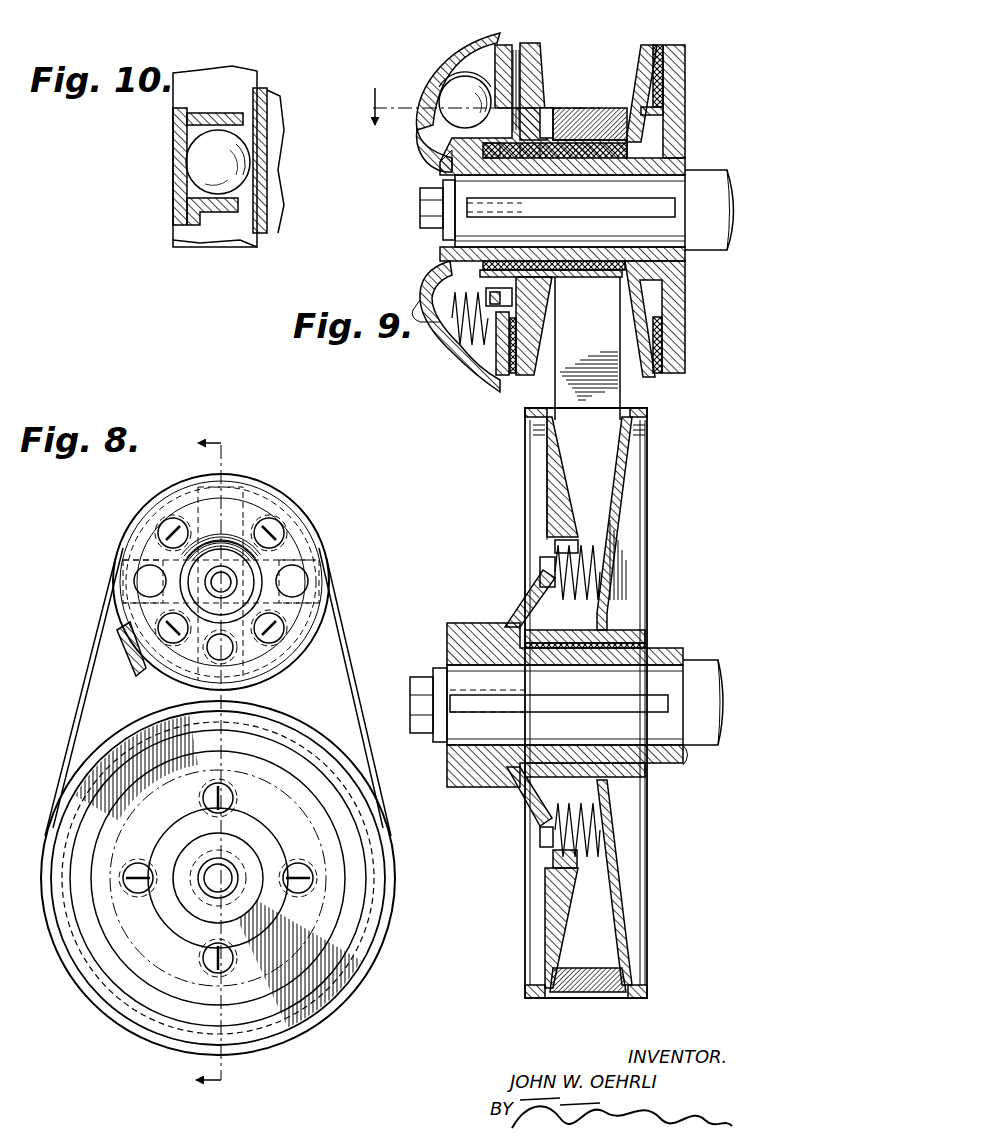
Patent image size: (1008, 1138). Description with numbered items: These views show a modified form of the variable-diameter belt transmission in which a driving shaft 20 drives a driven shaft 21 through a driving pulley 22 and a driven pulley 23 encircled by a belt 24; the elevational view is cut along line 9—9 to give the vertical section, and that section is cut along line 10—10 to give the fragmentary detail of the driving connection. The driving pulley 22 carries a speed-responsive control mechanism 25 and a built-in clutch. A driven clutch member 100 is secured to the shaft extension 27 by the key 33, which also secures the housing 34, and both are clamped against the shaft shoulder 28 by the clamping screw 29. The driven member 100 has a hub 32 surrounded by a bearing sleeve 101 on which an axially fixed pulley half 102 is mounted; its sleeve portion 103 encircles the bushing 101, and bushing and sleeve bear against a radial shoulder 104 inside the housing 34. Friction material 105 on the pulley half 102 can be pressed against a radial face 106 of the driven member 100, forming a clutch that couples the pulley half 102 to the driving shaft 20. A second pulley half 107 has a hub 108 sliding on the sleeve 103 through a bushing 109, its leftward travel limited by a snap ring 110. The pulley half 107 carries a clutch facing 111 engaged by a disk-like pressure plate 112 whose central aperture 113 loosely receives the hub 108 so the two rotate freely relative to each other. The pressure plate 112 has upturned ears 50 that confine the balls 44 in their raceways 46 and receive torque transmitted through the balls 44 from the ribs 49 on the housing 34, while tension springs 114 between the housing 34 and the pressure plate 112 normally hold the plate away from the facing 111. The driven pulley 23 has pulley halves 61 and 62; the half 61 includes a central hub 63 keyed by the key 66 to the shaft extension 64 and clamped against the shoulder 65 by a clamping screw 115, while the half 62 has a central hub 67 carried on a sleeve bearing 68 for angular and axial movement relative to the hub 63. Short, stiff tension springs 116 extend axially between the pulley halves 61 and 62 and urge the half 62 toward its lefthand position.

In FIG. 8, the section line 9— 9 is at (227, 763).
In FIG. 9, the section line 10— 10 is at (548, 76).
In FIG. 9, the driving shaft 20 is at (718, 217).
In FIG. 9, the driven shaft 21 is at (707, 695).
In FIG. 9, the driving pulley 22 is at (694, 72).
In FIG. 8, the driving pulley 22 is at (118, 525).
In FIG. 9, the driven pulley 23 is at (663, 513).
In FIG. 8, the driven pulley 23 is at (76, 1012).
In FIG. 9, the belt 24 is at (550, 377).
In FIG. 8, the belt 24 is at (327, 683).
In FIG. 9, the speed-responsive control mechanism 25 is at (445, 58).
In FIG. 9, the shaft extension 27 is at (670, 177).
In FIG. 9, the shaft shoulder 28 is at (678, 262).
In FIG. 9, the clamping screw 29 is at (422, 210).
In FIG. 9, the hub 32 is at (587, 348).
In FIG. 9, the key 33 is at (643, 182).
In FIG. 10, the housing 34 is at (174, 128).
In FIG. 9, the housing 34 is at (420, 115).
In FIG. 8, the housing 34 is at (283, 512).
In FIG. 10, the balls 44 is at (200, 176).
In FIG. 9, the balls 44 is at (440, 88).
In FIG. 8, the balls 44 is at (167, 574).
In FIG. 9, the raceways 46 is at (469, 62).
In FIG. 10, the ribs 49 is at (222, 208).
In FIG. 10, the upturned ears 50 is at (205, 118).
In FIG. 9, the pulley half 61 is at (530, 482).
In FIG. 8, the pulley half 61 is at (138, 1000).
In FIG. 9, the pulley half 62 is at (646, 454).
In FIG. 9, the central hub 63 is at (660, 648).
In FIG. 9, the shaft extension 64 is at (677, 673).
In FIG. 9, the shoulder 65 is at (672, 753).
In FIG. 9, the key 66 is at (600, 698).
In FIG. 9, the central hub 67 is at (633, 627).
In FIG. 9, the sleeve bearing 68 is at (547, 665).
In FIG. 9, the driven clutch member 100 is at (690, 62).
In FIG. 9, the bearing sleeve 101 is at (608, 277).
In FIG. 9, the stationary pulley half 102 is at (642, 62).
In FIG. 9, the sleeve portion 103 is at (607, 112).
In FIG. 9, the radial shoulder 104 is at (487, 160).
In FIG. 9, the friction material 105 is at (660, 48).
In FIG. 9, the radial face 106 is at (664, 96).
In FIG. 9, the second pulley half 107 is at (546, 70).
In FIG. 9, the hub 108 is at (553, 145).
In FIG. 9, the bushing 109 is at (538, 160).
In FIG. 9, the snap ring 110 is at (446, 163).
In FIG. 9, the clutch facing 111 is at (512, 50).
In FIG. 10, the pressure plate 112 is at (266, 112).
In FIG. 9, the pressure plate 112 is at (514, 48).
In FIG. 9, the central aperture 113 is at (547, 115).
In FIG. 9, the tension springs 114 is at (446, 360).
In FIG. 8, the tension springs 114 is at (286, 528).
In FIG. 9, the clamping screw 115 is at (427, 733).
In FIG. 8, the clamping screw 115 is at (207, 882).
In FIG. 9, the tension springs 116 is at (543, 566).
In FIG. 8, the tension springs 116 is at (234, 798).